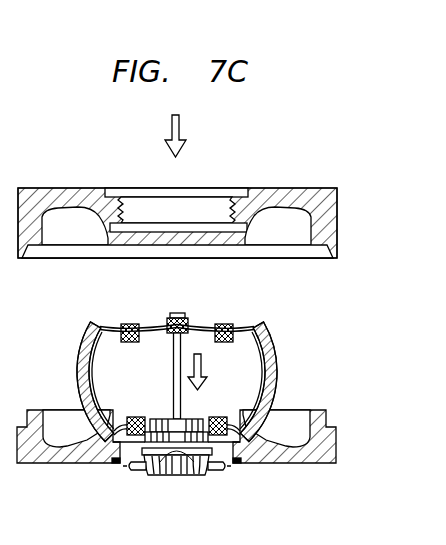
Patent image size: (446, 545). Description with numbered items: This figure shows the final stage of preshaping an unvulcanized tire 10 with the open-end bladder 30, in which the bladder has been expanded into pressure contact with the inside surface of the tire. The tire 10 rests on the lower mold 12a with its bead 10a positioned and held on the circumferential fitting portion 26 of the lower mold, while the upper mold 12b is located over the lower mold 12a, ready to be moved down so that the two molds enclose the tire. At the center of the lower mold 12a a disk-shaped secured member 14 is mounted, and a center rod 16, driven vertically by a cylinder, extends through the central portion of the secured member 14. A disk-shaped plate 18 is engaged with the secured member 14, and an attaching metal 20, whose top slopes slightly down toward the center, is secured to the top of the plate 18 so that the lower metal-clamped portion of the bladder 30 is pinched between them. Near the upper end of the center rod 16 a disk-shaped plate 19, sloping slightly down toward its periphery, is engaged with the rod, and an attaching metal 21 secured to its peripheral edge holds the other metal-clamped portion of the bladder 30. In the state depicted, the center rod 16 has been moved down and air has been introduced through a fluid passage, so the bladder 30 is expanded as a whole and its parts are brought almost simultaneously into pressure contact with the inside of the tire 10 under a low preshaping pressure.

The upper mold 12b is at (339, 222).
The lower mold 12a is at (82, 466).
The bead 10a is at (57, 428).
The unvulcanized tire 10 is at (277, 347).
The bladder 30 is at (91, 376).
The plate 19 is at (201, 323).
The attaching metal 21 is at (131, 323).
The center rod 16 is at (173, 360).
The attaching metal 20 is at (136, 417).
The plate 18 is at (136, 442).
The secured member 14 is at (186, 478).
The fitting portion 26 is at (226, 466).